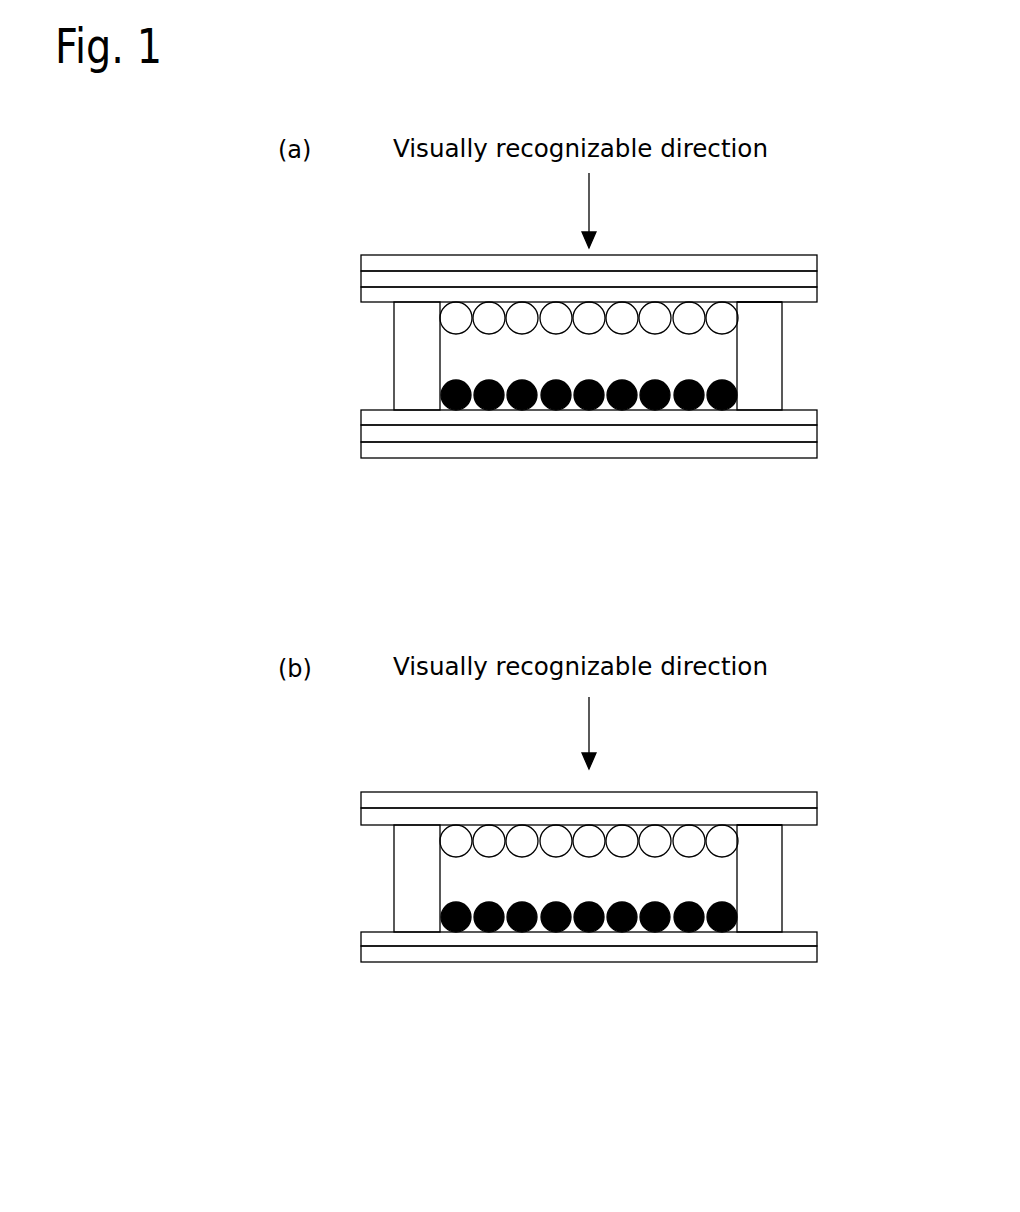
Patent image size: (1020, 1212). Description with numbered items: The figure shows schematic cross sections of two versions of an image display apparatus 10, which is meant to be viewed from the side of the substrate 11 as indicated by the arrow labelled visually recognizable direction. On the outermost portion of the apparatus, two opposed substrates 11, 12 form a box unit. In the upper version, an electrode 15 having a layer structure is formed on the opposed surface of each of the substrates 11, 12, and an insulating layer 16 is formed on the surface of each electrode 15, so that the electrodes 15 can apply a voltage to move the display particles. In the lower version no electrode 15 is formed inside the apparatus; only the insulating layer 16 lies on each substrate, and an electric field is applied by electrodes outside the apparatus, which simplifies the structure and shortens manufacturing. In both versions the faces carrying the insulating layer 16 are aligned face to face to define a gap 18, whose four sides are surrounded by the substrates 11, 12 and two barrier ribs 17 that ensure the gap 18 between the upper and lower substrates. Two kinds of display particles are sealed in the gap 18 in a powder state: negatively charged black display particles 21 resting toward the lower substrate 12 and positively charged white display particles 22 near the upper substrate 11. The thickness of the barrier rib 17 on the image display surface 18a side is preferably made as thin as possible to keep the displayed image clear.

The image display apparatus 10 is at (768, 218).
The substrate 11 is at (361, 257).
The substrate 12 is at (361, 450).
The electrode 15 is at (361, 280).
The insulating layer 16 is at (361, 295).
The barrier rib 17 is at (418, 396).
The gap 18 is at (722, 357).
The image display surface 18a is at (731, 255).
The black display particles 21 is at (655, 410).
The white display particles 22 is at (657, 317).